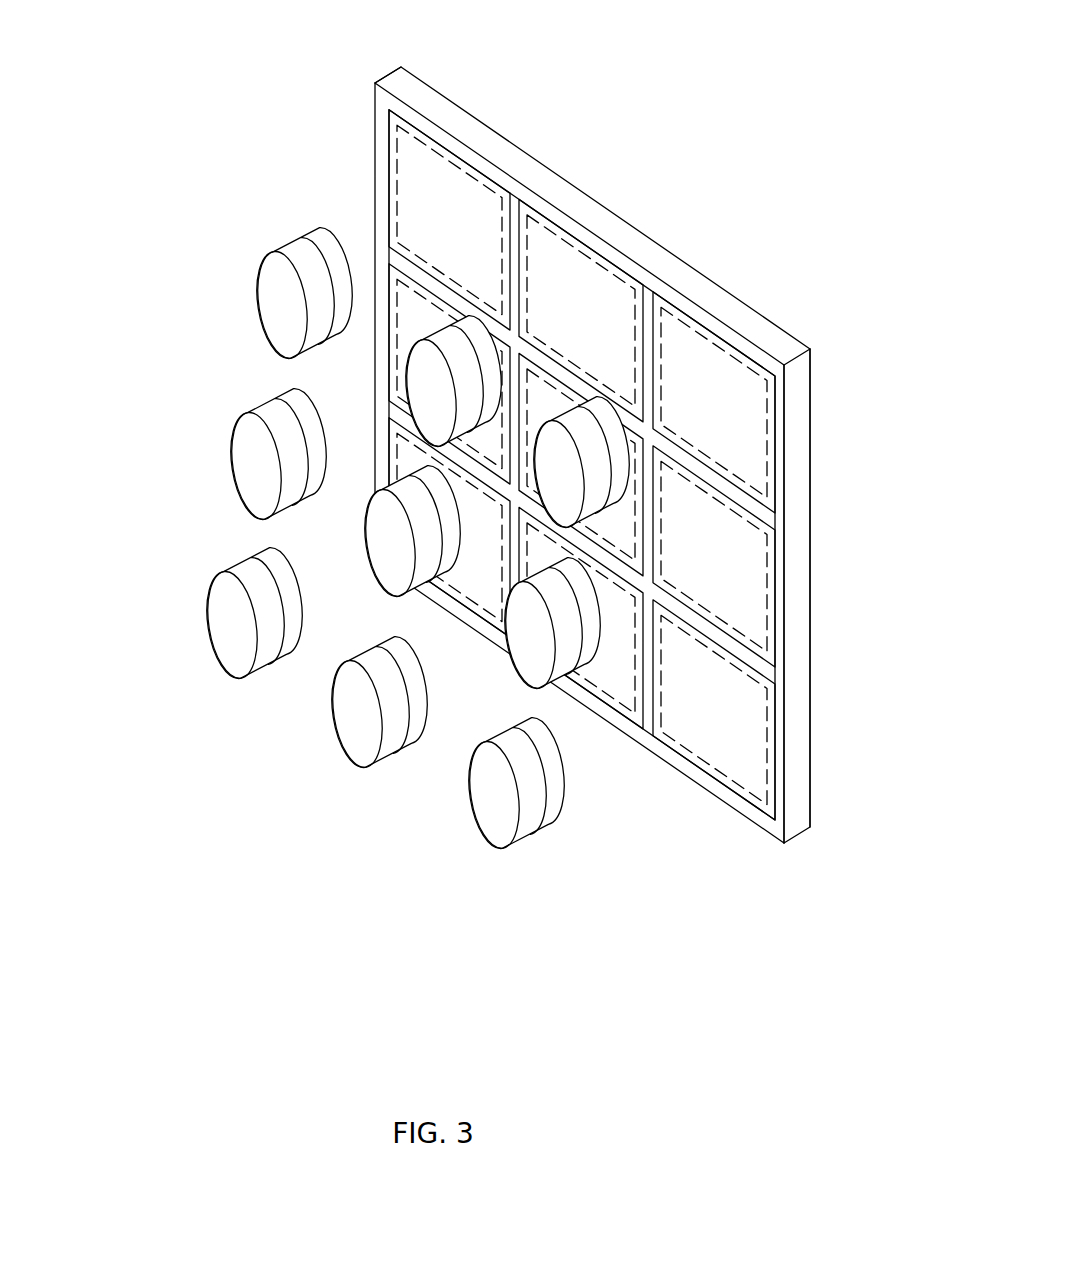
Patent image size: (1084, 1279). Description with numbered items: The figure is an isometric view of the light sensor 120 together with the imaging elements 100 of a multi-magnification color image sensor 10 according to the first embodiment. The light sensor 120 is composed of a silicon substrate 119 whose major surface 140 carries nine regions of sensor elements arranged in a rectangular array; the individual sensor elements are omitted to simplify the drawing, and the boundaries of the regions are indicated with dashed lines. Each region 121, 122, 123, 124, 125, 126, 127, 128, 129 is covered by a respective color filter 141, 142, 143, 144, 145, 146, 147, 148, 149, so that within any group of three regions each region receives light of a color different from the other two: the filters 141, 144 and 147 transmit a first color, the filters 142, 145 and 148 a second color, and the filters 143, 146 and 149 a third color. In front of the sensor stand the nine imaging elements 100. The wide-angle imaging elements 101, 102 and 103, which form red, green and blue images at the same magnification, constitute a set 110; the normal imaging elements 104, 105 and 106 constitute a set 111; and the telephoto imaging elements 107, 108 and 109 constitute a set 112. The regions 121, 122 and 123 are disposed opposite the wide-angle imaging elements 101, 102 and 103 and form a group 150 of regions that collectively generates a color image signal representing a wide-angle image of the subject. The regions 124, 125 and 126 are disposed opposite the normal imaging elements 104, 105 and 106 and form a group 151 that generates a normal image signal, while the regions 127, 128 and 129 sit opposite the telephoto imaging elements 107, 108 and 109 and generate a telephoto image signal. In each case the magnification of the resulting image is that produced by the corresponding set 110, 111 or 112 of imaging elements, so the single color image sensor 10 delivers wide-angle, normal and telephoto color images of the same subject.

The multi-magnification color image sensor 10 is at (457, 996).
The imaging elements 100 is at (594, 840).
The wide-angle imaging element 101 is at (283, 312).
The wide-angle imaging element 102 is at (433, 372).
The wide-angle imaging element 103 is at (558, 467).
The normal imaging element 104 is at (245, 450).
The normal imaging element 105 is at (388, 555).
The normal imaging element 106 is at (535, 627).
The telephoto imaging element 107 is at (237, 620).
The telephoto imaging element 108 is at (368, 710).
The telephoto imaging element 109 is at (503, 783).
The set of wide-angle imaging elements 110 is at (148, 240).
The set of normal imaging elements 111 is at (150, 412).
The set of telephoto imaging elements 112 is at (126, 596).
The silicon substrate 119 is at (787, 350).
The light sensor 120 is at (533, 92).
The region of light sensor elements 121 is at (428, 167).
The region of light sensor elements 122 is at (541, 243).
The region of light sensor elements 123 is at (690, 340).
The region of light sensor elements 124 is at (412, 305).
The region of light sensor elements 125 is at (565, 392).
The region of light sensor elements 126 is at (735, 575).
The region of light sensor elements 127 is at (380, 483).
The region of light sensor elements 128 is at (600, 668).
The region of light sensor elements 129 is at (733, 753).
The major surface 140 is at (375, 83).
The color filter 141 is at (395, 123).
The color filter 142 is at (568, 233).
The color filter 143 is at (742, 360).
The color filter 144 is at (397, 268).
The color filter 145 is at (538, 395).
The color filter 146 is at (767, 650).
The color filter 147 is at (390, 420).
The color filter 148 is at (632, 705).
The color filter 149 is at (766, 815).
The group of regions 150 is at (822, 455).
The group of regions 151 is at (862, 628).